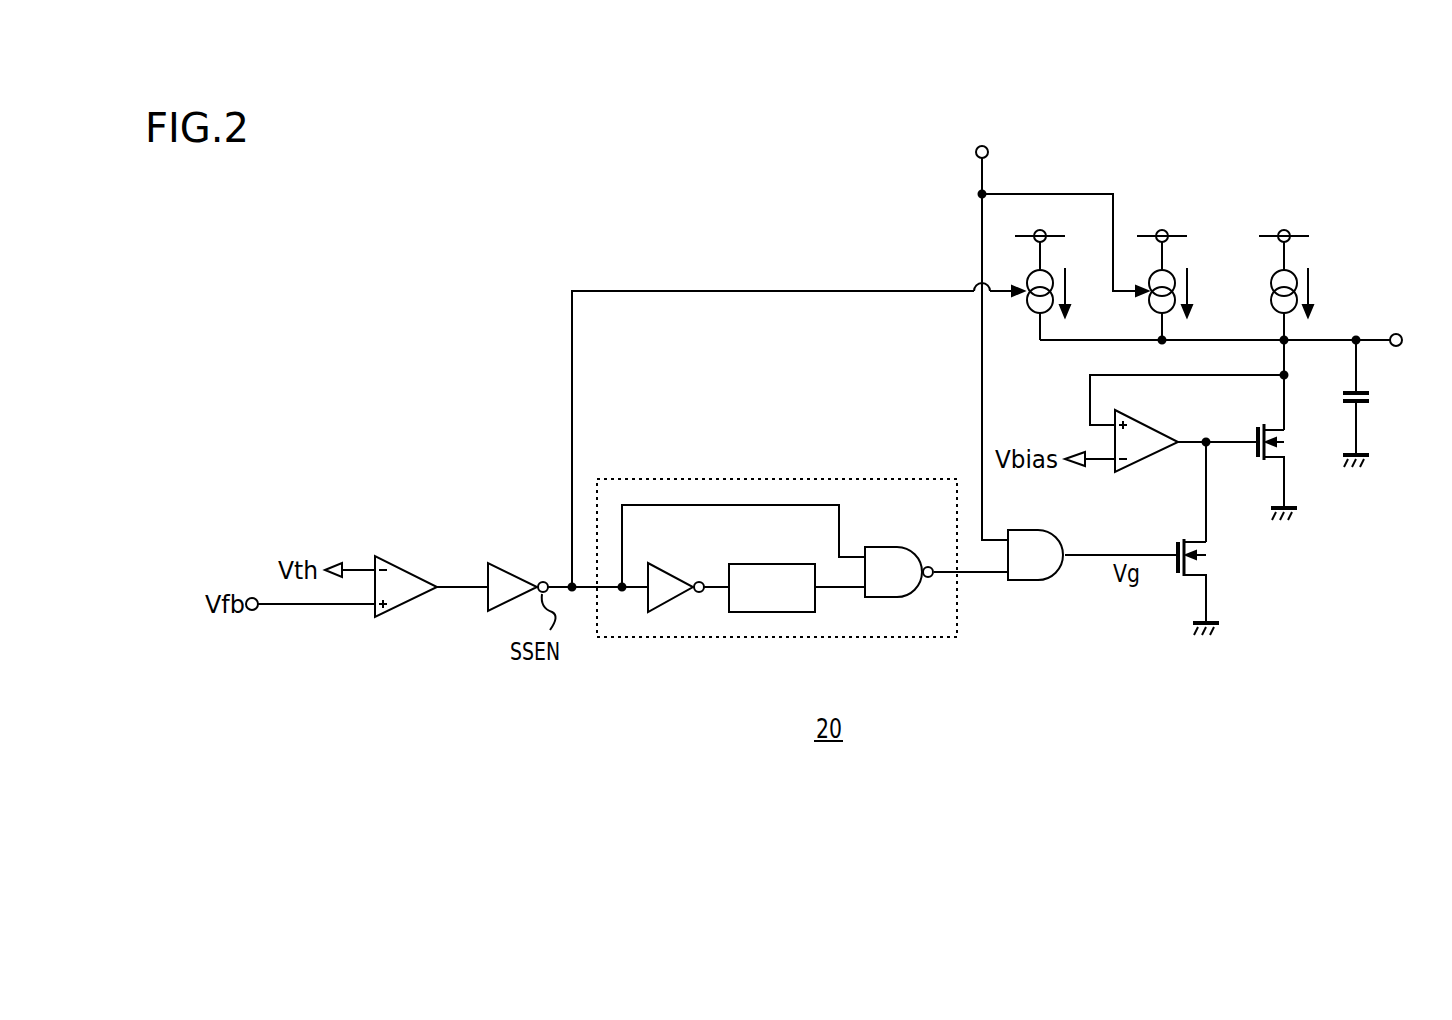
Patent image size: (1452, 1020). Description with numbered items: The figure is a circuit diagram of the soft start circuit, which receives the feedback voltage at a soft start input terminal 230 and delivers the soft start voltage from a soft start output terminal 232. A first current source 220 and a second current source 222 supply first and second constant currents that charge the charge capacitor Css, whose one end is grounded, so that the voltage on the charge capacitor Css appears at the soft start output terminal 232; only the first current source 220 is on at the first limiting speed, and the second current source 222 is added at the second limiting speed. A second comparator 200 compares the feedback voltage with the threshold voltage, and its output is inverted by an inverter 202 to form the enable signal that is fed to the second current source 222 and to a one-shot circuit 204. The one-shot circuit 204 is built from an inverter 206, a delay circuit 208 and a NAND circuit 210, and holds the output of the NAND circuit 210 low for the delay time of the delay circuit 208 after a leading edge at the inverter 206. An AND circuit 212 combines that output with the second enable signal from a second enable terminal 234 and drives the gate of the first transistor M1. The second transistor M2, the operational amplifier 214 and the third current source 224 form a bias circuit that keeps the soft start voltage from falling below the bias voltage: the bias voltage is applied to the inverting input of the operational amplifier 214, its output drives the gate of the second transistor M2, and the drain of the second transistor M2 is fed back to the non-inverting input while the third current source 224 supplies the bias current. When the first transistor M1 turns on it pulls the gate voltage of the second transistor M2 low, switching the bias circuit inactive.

The second comparator 200 is at (430, 552).
The inverter 202 is at (512, 574).
The one-shot circuit 204 is at (776, 479).
The inverter 206 is at (670, 574).
The delay circuit 208 is at (768, 564).
The NAND circuit 210 is at (890, 547).
The AND circuit 212 is at (1038, 582).
The operational amplifier 214 is at (1150, 456).
The first current source 220 is at (1151, 307).
The second current source 222 is at (1032, 310).
The third current source 224 is at (1273, 306).
The soft start input terminal 230 is at (252, 611).
The soft start output terminal 232 is at (1396, 334).
The second enable terminal 234 is at (976, 152).
The first transistor M1 is at (1200, 548).
The second transistor M2 is at (1278, 433).
The charge capacitor Css is at (1370, 397).